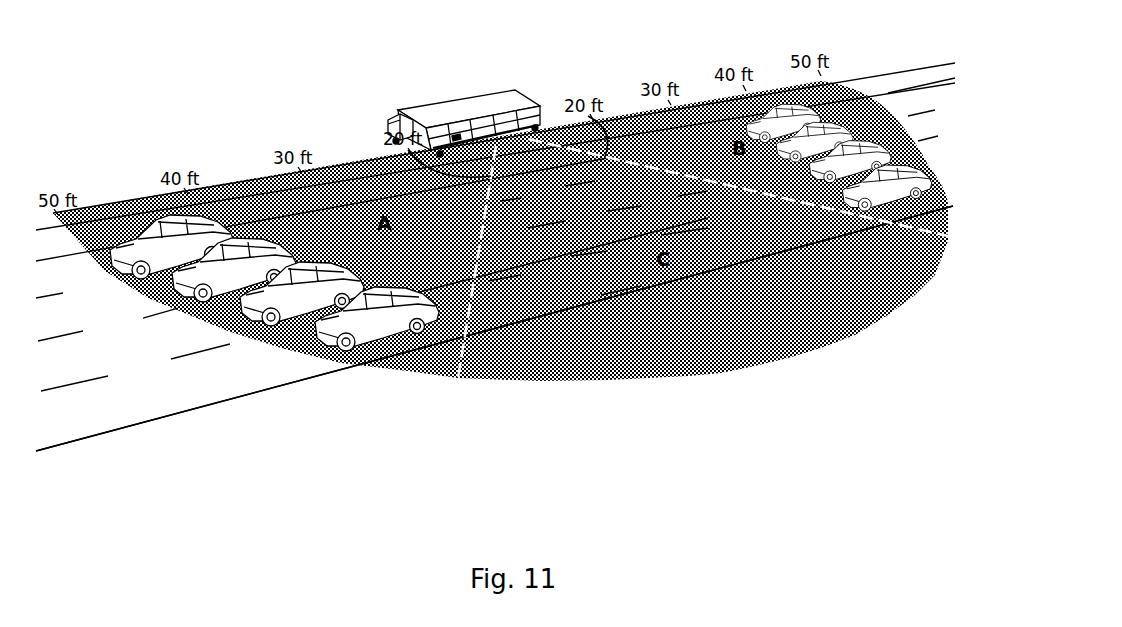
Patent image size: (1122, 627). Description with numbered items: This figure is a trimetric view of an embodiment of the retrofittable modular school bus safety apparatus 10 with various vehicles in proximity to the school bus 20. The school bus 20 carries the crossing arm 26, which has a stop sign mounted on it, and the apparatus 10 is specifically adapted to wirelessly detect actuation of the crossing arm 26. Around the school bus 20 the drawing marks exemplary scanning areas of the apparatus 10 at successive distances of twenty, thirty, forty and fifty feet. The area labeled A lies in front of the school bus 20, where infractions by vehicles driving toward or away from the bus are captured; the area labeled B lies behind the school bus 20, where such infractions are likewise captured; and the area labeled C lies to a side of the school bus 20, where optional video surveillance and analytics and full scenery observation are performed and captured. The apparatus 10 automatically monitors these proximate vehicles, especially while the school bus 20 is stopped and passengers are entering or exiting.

The retrofittable modular school bus safety apparatus 10 is at (498, 128).
The school bus 20 is at (503, 88).
The crossing arm 26 is at (448, 130).